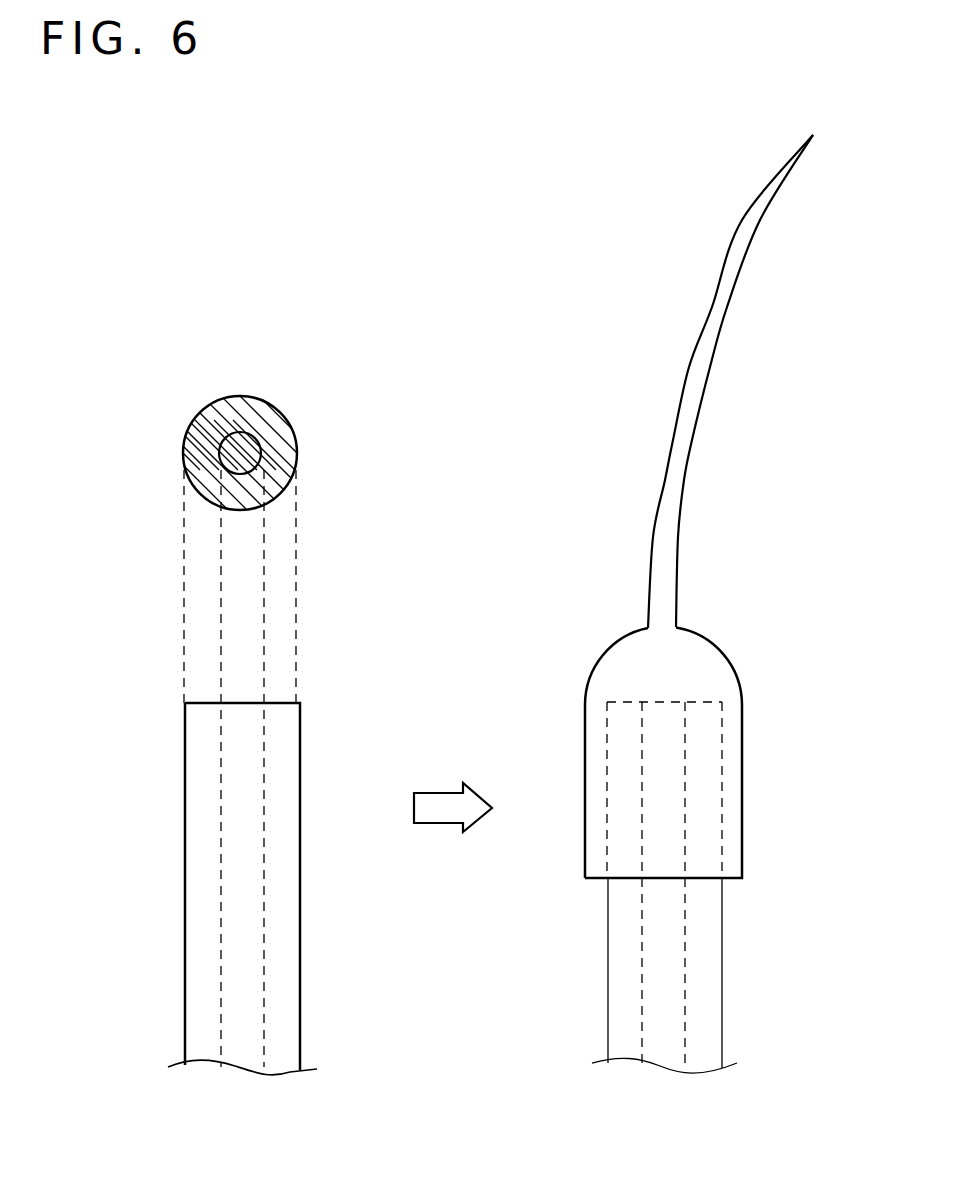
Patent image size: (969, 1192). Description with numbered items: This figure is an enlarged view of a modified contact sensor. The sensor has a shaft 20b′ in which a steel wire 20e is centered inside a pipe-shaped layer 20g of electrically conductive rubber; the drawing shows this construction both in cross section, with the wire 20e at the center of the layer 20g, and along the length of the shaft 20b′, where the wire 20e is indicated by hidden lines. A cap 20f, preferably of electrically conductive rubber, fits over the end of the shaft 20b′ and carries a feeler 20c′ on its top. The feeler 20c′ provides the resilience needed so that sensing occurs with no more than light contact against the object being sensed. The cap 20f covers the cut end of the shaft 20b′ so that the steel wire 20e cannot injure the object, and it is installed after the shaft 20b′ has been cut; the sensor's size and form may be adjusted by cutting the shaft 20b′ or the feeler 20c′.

The steel wire 20e is at (240, 440).
The pipe-shaped layer of electrically conductive rubber 20g is at (273, 448).
The shaft 20b′ is at (800, 1010).
The feeler 20c′ is at (711, 365).
The cap 20f is at (722, 731).